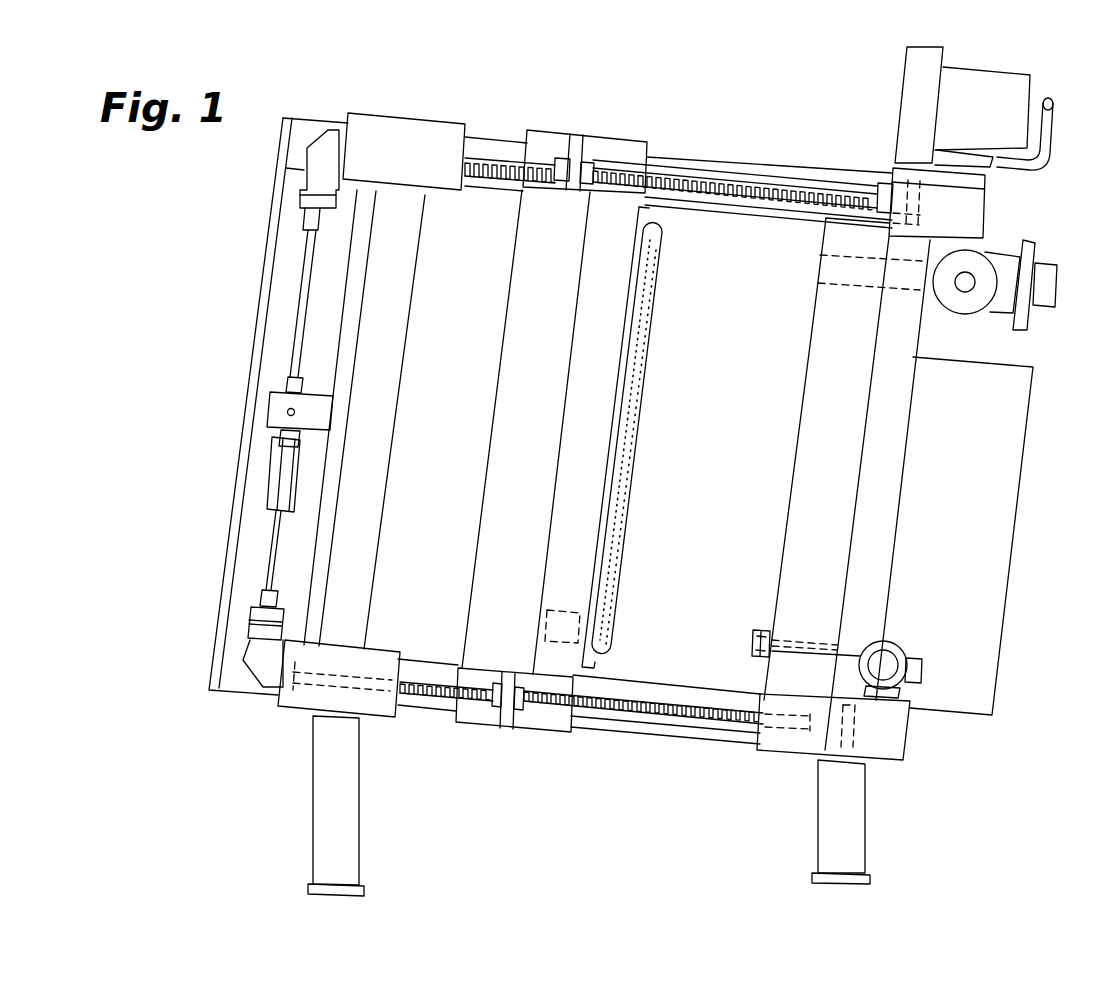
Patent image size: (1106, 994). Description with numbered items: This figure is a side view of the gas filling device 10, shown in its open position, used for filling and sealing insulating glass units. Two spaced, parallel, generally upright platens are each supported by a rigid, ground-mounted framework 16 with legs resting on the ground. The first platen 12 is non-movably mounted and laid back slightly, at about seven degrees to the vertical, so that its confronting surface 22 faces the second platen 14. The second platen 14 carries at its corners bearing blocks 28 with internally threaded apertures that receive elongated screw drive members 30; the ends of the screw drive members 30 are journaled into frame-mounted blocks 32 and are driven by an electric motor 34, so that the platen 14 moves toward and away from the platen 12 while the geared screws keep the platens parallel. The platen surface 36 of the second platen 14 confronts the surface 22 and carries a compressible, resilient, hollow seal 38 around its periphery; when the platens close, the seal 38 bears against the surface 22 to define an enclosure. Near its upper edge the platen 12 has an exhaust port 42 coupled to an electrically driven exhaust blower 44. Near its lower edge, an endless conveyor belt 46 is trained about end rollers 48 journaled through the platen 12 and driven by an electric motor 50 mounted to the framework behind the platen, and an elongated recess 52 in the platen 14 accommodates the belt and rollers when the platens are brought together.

The gas filling device 10 is at (240, 195).
The first platen 12 is at (857, 342).
The second platen 14 is at (617, 293).
The framework 16 is at (345, 790).
The confronting surface 22 is at (796, 438).
The bearing blocks 28 is at (579, 152).
The screw drive members 30 is at (700, 177).
The frame-mounted blocks 32 is at (290, 703).
The electric motor 34 is at (268, 498).
The platen surface 36 is at (664, 235).
The seal 38 is at (608, 603).
The exhaust port 42 is at (857, 257).
The exhaust blower 44 is at (1008, 262).
The conveyor belt 46 is at (772, 622).
The end rollers 48 is at (772, 642).
The electric motor 50 is at (888, 660).
The elongated recess 52 is at (547, 641).